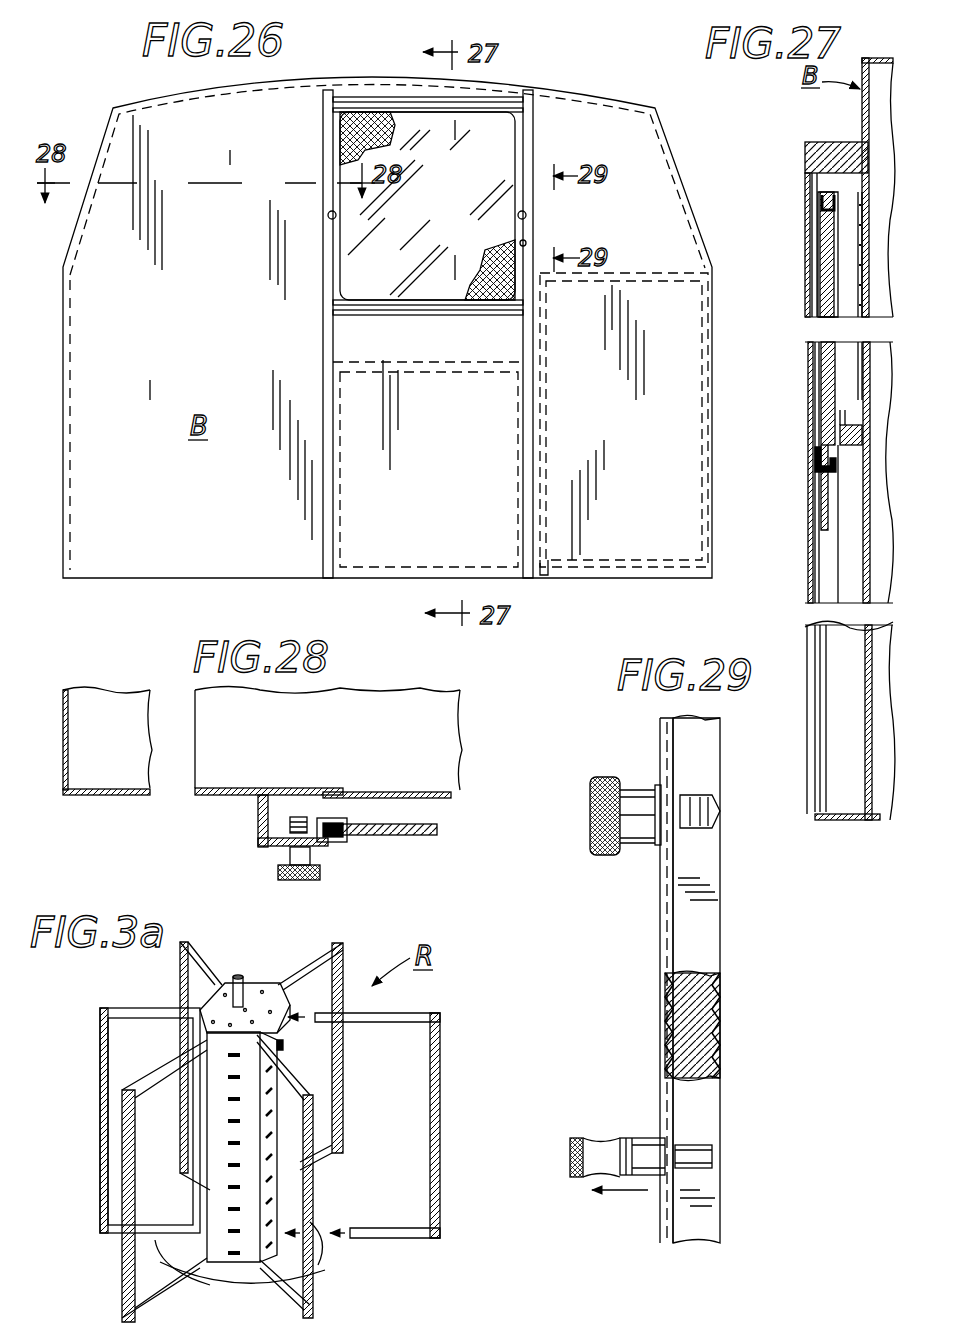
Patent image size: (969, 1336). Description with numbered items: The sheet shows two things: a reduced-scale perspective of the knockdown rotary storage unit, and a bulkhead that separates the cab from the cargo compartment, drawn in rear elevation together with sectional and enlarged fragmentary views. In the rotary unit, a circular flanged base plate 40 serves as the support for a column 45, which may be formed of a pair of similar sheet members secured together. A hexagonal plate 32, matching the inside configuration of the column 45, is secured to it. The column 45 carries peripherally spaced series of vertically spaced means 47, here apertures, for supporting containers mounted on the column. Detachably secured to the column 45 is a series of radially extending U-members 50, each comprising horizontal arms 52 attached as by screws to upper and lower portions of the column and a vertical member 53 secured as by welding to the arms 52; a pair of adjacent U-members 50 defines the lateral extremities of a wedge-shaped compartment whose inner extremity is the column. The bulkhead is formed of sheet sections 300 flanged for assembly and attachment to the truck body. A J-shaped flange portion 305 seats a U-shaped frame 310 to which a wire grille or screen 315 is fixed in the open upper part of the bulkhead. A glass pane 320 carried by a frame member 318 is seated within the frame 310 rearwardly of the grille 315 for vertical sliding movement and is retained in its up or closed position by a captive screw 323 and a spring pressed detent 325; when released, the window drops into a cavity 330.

In FIG. 26, the sheet sections 300 is at (150, 550).
In FIG. 27, the sheet sections 300 is at (866, 724).
In FIG. 28, the sheet sections 300 is at (225, 793).
In FIG. 26, the J-shaped flange portion 305 is at (324, 345).
In FIG. 27, the J-shaped flange portion 305 is at (805, 150).
In FIG. 28, the J-shaped flange portion 305 is at (258, 822).
In FIG. 28, the U-shaped frame 310 is at (268, 810).
In FIG. 26, the wire grille or screen 315 is at (345, 133).
In FIG. 27, the wire grille or screen 315 is at (860, 280).
In FIG. 28, the wire grille or screen 315 is at (400, 792).
In FIG. 27, the frame member 318 is at (840, 460).
In FIG. 28, the frame member 318 is at (340, 842).
In FIG. 29, the frame member 318 is at (665, 935).
In FIG. 26, the glass pane 320 is at (520, 137).
In FIG. 27, the glass pane 320 is at (822, 392).
In FIG. 28, the glass pane 320 is at (430, 836).
In FIG. 29, the glass pane 320 is at (665, 1020).
In FIG. 26, the captive screw 323 is at (328, 218).
In FIG. 28, the captive screw 323 is at (320, 873).
In FIG. 29, the captive screw 323 is at (590, 795).
In FIG. 26, the spring pressed detent 325 is at (528, 243).
In FIG. 29, the spring pressed detent 325 is at (600, 1145).
In FIG. 26, the cavity 330 is at (528, 440).
In FIG. 27, the cavity 330 is at (843, 582).
In FIG. 3A, the polygonal plate 32 is at (255, 990).
In FIG. 3A, the flanged base plate 40 is at (318, 1232).
In FIG. 3A, the column 45 is at (287, 1045).
In FIG. 3A, the vertically spaced means 47 is at (225, 1195).
In FIG. 3A, the U-member 50 is at (100, 1005).
In FIG. 3A, the horizontal arm 52 is at (368, 1028).
In FIG. 3A, the vertical member 53 is at (125, 1145).